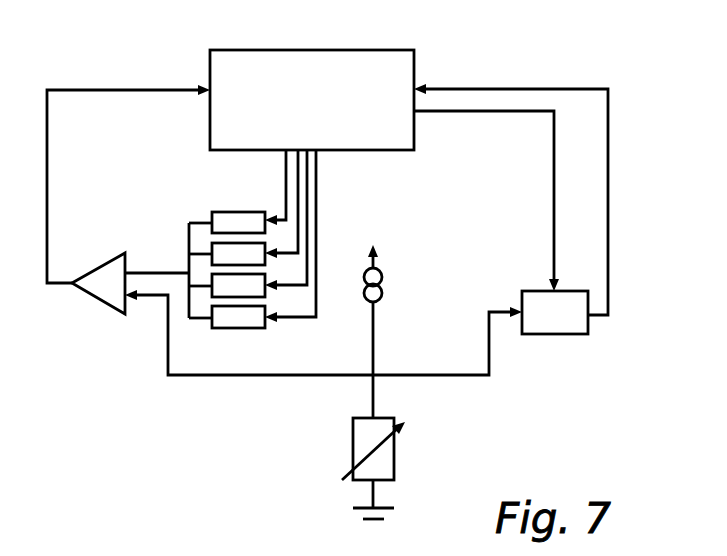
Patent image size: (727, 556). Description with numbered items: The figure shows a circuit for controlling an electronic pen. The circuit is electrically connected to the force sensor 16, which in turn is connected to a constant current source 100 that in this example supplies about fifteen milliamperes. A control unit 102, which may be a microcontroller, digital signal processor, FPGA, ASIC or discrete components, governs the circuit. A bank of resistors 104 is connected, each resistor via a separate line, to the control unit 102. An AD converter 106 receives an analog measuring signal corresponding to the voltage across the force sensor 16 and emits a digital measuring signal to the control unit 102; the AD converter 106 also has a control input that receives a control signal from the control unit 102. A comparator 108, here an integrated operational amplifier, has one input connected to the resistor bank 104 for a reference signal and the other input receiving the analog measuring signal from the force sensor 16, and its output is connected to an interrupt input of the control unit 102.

The control unit 102 is at (362, 50).
The bank of resistors 104 is at (266, 228).
The constant current source 100 is at (383, 275).
The AD converter 106 is at (580, 335).
The comparator 108 is at (86, 296).
The force sensor 16 is at (395, 447).